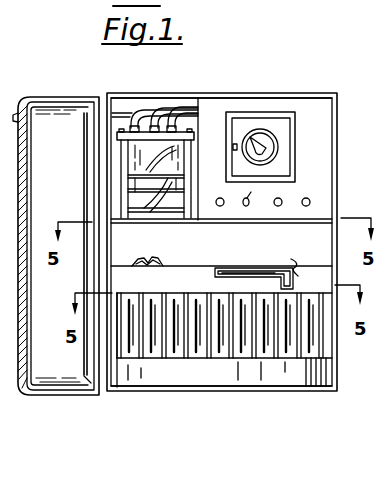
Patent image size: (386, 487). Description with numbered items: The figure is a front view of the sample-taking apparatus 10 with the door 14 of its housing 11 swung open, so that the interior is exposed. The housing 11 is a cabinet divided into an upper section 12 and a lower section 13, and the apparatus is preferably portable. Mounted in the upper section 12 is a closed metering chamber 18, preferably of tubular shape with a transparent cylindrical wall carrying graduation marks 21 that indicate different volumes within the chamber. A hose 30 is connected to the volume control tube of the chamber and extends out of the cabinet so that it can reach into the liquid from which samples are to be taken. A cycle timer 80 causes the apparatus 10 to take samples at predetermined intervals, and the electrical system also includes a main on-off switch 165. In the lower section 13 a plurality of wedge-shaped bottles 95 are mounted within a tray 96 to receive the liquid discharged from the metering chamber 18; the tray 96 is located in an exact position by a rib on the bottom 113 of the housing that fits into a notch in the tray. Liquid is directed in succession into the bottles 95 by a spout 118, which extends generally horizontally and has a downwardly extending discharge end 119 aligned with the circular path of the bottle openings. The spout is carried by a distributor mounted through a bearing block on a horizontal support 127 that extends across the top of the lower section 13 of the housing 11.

The sample-taking apparatus 10 is at (303, 103).
The housing 11 is at (272, 93).
The upper section 12 is at (181, 104).
The lower section 13 is at (243, 372).
The door 14 is at (48, 362).
The metering chamber 18 is at (128, 161).
The graduation marks 21 is at (127, 183).
The hose 30 is at (120, 113).
The cycle timer 80 is at (273, 147).
The bottles 95 is at (198, 340).
The tray 96 is at (295, 372).
The bottom of the housing 113 is at (223, 390).
The spout 118 is at (247, 270).
The discharge end 119 is at (292, 269).
The horizontal support 127 is at (153, 268).
The main on-off switch 165 is at (250, 200).